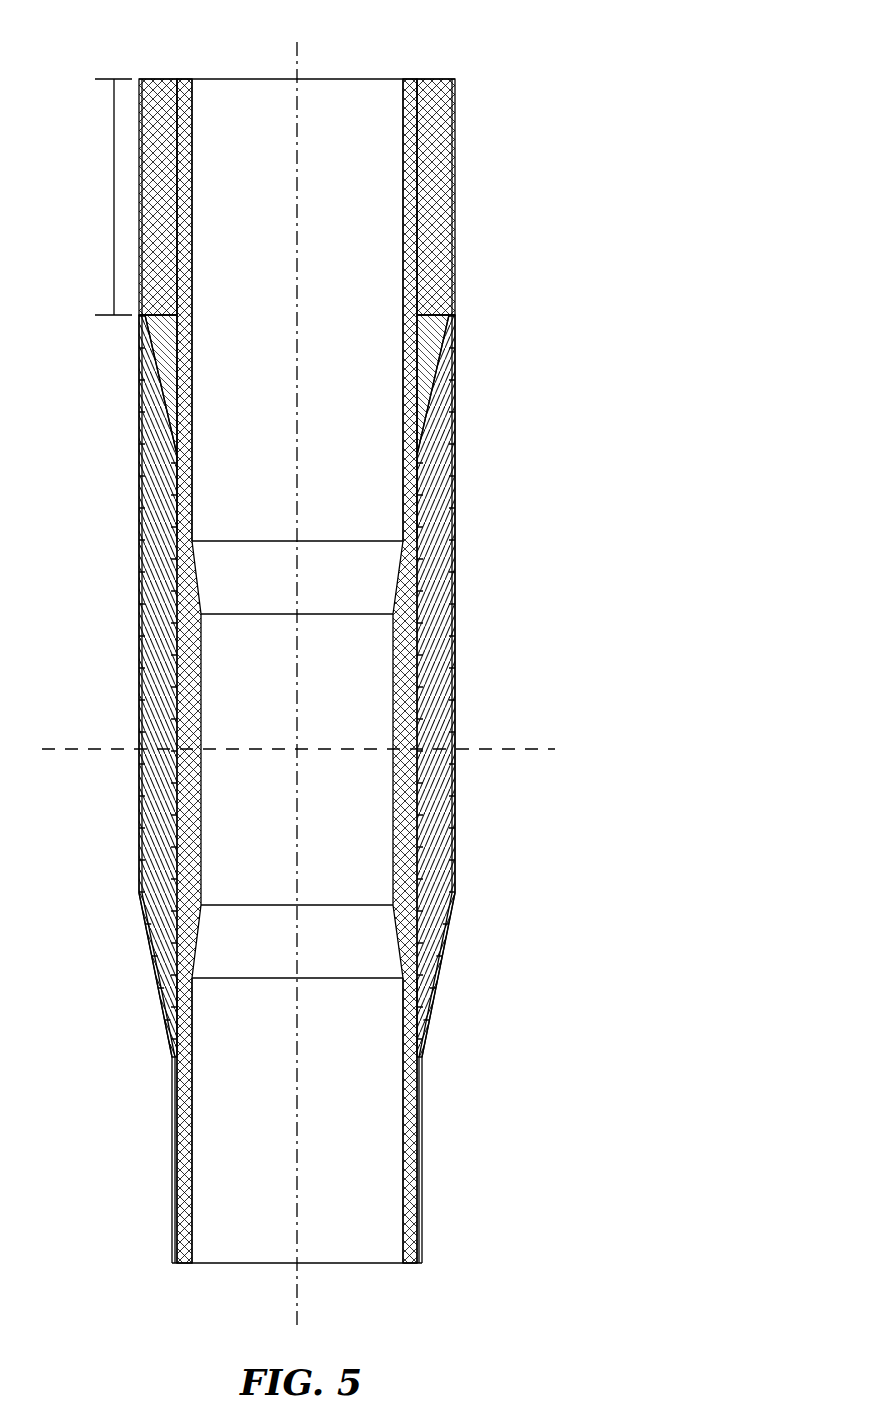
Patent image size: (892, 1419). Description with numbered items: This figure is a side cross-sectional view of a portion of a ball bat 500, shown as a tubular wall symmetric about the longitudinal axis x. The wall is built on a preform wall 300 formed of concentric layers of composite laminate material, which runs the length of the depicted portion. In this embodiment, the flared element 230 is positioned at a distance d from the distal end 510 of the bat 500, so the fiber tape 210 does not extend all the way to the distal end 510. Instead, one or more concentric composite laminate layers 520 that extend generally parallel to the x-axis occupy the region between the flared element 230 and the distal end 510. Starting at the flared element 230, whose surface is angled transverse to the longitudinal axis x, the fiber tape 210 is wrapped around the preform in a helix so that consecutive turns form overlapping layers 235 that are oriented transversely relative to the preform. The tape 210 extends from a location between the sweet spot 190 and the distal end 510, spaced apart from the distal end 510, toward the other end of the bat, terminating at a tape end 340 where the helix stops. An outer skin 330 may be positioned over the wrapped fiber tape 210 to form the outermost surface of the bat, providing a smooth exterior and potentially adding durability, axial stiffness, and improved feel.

The ball bat 500 is at (375, 673).
The distal end 510 is at (163, 58).
The preform wall 300 is at (410, 82).
The outer skin 330 is at (452, 138).
The tape end 340 is at (420, 1060).
The concentric composite laminate layers 520 is at (433, 232).
The flared element 230 is at (430, 325).
The overlapping layers 235 is at (448, 450).
The fiber tape 210 is at (431, 521).
The sweet spot 190 is at (87, 749).
The distance d is at (112, 219).
The longitudinal axis x is at (297, 1293).